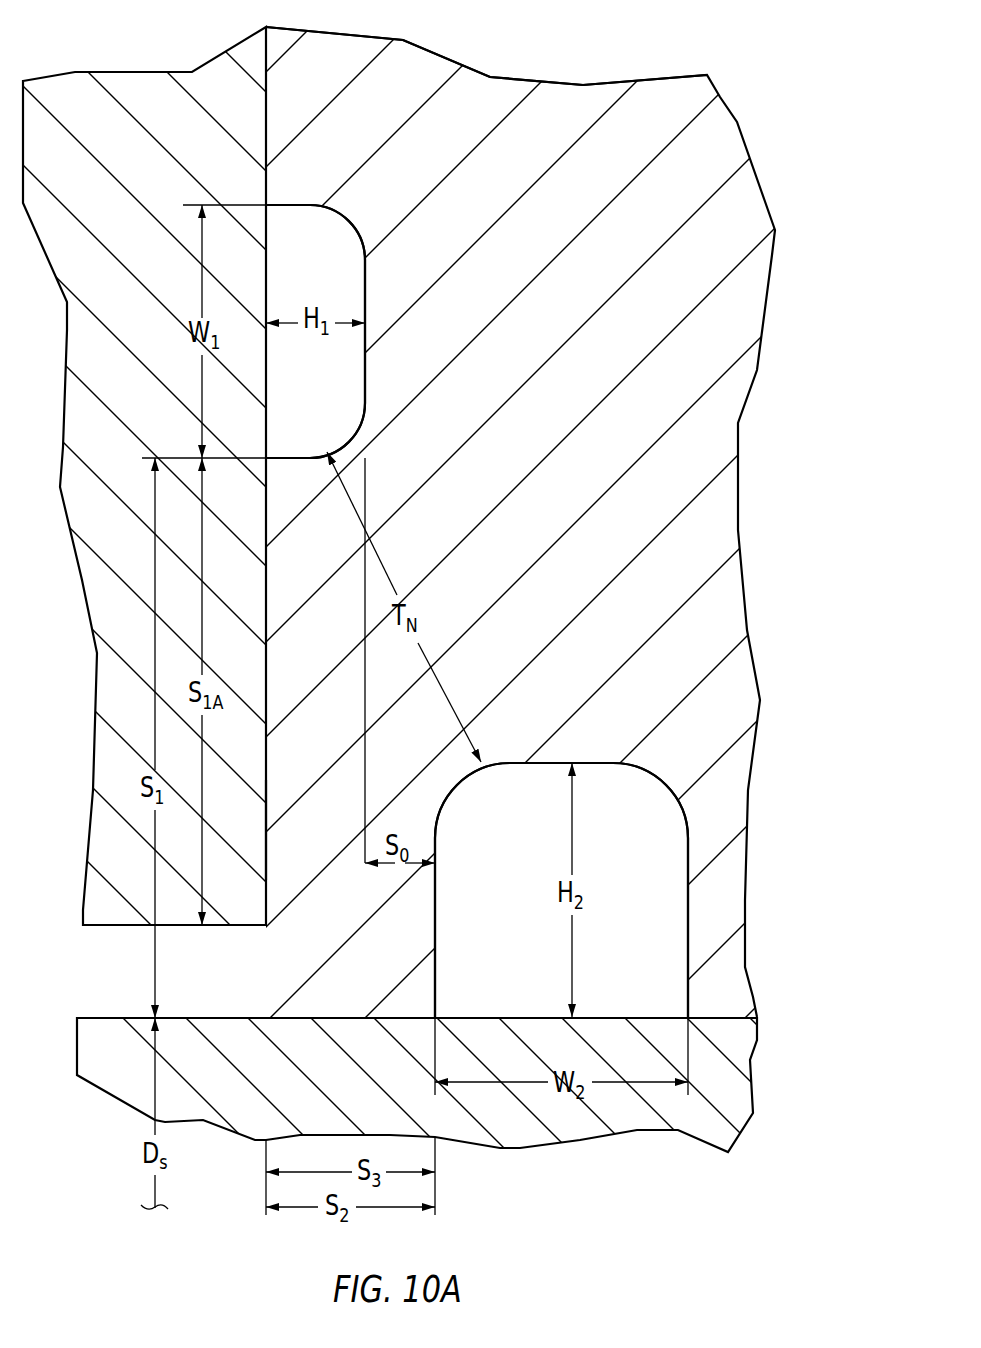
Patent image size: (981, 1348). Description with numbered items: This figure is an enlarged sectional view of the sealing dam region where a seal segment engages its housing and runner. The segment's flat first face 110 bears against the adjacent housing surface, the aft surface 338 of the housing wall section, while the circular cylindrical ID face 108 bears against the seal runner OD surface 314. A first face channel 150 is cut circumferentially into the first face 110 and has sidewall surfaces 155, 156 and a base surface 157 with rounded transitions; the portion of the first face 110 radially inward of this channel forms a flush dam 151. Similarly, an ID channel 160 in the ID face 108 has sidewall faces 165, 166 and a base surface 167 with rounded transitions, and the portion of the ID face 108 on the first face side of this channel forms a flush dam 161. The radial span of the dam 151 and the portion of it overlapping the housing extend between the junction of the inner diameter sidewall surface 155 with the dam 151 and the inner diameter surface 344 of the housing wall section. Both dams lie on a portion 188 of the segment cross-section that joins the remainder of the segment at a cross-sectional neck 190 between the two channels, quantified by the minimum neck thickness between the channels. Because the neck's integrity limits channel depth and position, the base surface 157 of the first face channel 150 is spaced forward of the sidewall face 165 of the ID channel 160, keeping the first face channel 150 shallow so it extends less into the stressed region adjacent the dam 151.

The first face 110 is at (266, 43).
The aft surface of the wall section 338 is at (266, 58).
The cross-sectional neck 190 is at (420, 550).
The first face channel 150 is at (325, 281).
The sidewall surface 156 is at (328, 213).
The base surface 157 is at (365, 302).
The inner diameter sidewall surface 155 is at (280, 458).
The dam 151 is at (266, 865).
The ID face channel 160 is at (545, 950).
The sidewall face 165 is at (435, 903).
The sidewall face 166 is at (688, 893).
The base surface 167 is at (555, 763).
The portion of the segment cross-section 188 is at (355, 878).
The ID face 108 is at (733, 1018).
The dam 161 is at (360, 1020).
The seal runner OD surface 314 is at (715, 1017).
The inner diameter surface 344 is at (115, 927).